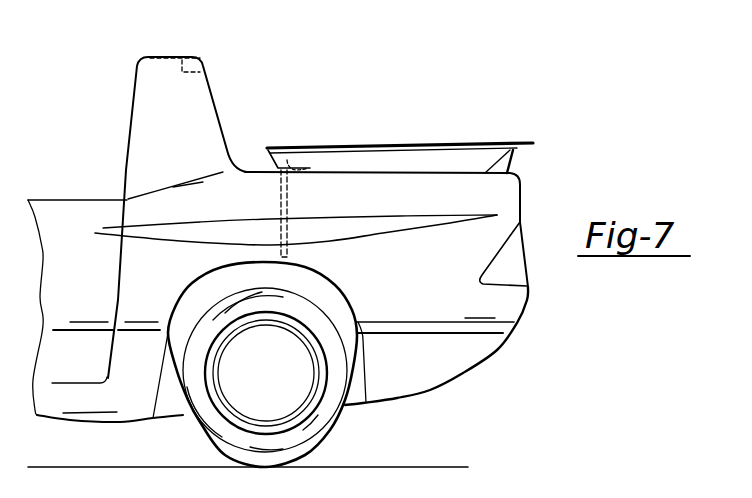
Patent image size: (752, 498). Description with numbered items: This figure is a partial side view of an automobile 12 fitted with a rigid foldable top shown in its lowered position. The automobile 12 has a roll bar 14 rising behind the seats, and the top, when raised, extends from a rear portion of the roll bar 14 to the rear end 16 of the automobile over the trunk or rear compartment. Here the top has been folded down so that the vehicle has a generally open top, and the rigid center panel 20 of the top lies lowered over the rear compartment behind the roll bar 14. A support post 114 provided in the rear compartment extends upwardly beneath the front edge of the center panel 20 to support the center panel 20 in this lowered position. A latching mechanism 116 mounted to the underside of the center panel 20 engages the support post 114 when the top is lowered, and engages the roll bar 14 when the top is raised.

The automobile 12 is at (522, 326).
The roll bar 14 is at (167, 70).
The rear end 16 is at (512, 178).
The center panel 20 is at (401, 153).
The support post 114 is at (288, 213).
The latching mechanism 116 is at (296, 157).